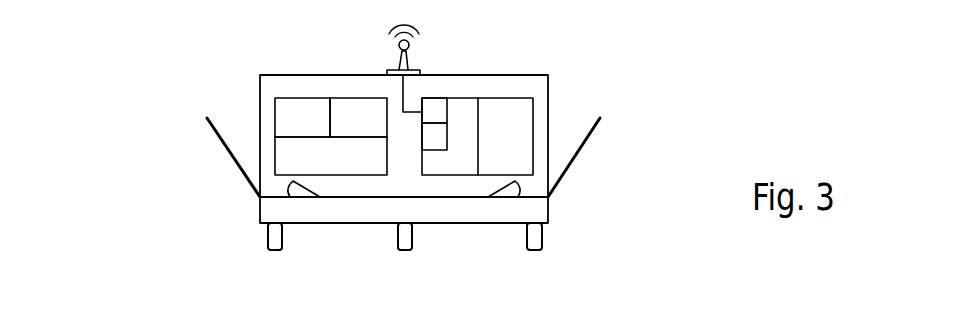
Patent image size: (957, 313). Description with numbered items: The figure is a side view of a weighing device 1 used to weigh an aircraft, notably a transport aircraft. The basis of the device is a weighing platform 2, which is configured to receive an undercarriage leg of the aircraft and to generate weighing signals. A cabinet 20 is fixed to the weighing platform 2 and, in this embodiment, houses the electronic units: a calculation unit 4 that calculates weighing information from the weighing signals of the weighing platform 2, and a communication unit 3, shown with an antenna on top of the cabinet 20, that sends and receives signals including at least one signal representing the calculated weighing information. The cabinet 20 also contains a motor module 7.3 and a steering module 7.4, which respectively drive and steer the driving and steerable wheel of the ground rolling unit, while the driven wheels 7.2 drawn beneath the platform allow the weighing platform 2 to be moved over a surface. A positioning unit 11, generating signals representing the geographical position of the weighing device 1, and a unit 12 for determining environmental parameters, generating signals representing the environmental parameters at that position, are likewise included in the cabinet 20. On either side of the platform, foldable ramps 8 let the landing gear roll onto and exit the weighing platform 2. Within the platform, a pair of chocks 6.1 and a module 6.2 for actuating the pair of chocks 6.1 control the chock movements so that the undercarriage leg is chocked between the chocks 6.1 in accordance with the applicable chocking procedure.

The weighing device 1 is at (187, 207).
The weighing platform 2 is at (471, 212).
The communication unit 3 is at (410, 48).
The calculation unit 4 is at (513, 120).
The chocks 6.1 is at (300, 190).
The module for actuating the pair of chocks 6.2 is at (293, 150).
The driven wheel 7.2 is at (268, 232).
The motor module 7.3 is at (293, 108).
The steering module 7.4 is at (352, 112).
The foldable ramps 8 is at (210, 127).
The positioning unit 11 is at (435, 108).
The environmental parameter determination unit 12 is at (437, 143).
The cabinet 20 is at (530, 86).